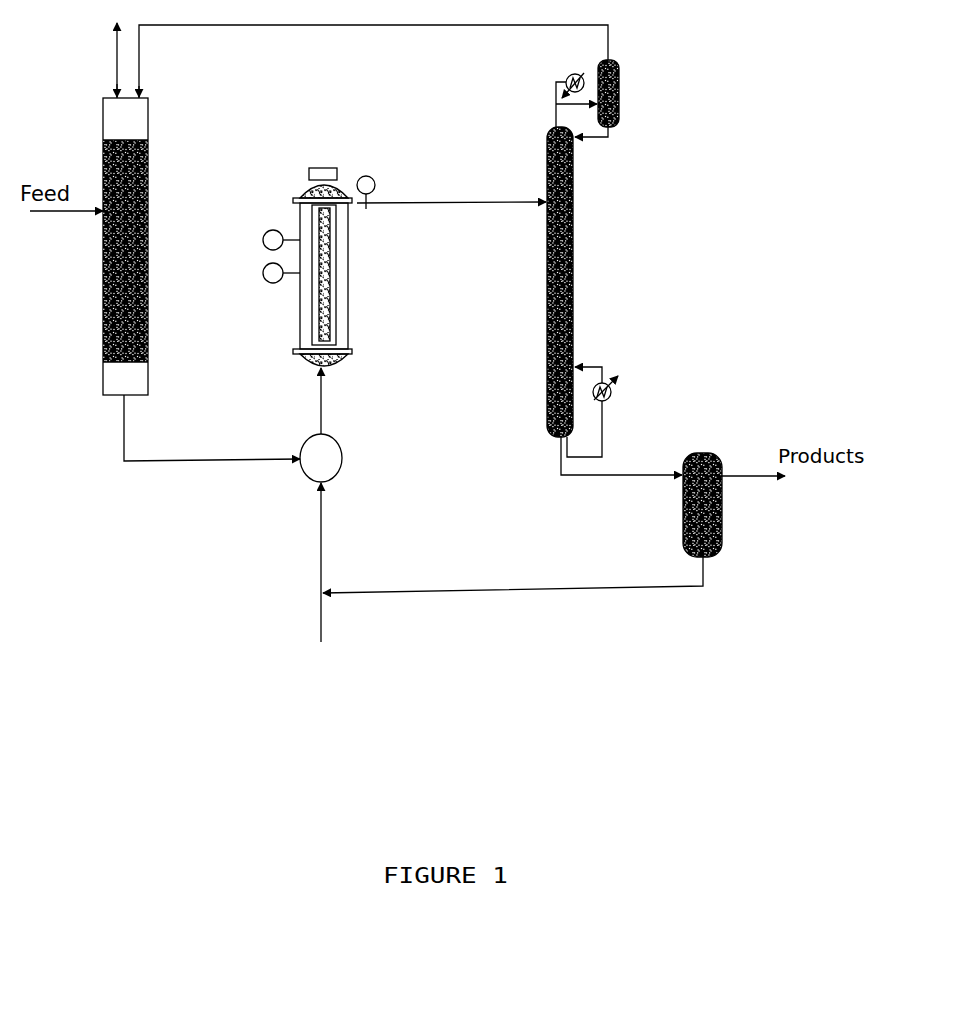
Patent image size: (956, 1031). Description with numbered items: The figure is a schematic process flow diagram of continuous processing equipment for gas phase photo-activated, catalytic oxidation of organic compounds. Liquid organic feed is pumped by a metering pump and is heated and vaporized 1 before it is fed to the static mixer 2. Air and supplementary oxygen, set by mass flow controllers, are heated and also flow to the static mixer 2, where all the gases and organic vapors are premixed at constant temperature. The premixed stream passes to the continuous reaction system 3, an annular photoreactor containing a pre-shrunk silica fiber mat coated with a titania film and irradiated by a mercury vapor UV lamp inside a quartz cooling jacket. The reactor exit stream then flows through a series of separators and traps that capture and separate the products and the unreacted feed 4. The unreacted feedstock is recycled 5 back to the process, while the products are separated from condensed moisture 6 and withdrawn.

The vaporizer 1 is at (157, 246).
The static mixer 2 is at (354, 454).
The continuous reaction system 3 is at (342, 267).
The separators and traps 4 is at (592, 282).
The recycle of unreacted feedstock 5 is at (641, 93).
The moisture separation 6 is at (740, 505).